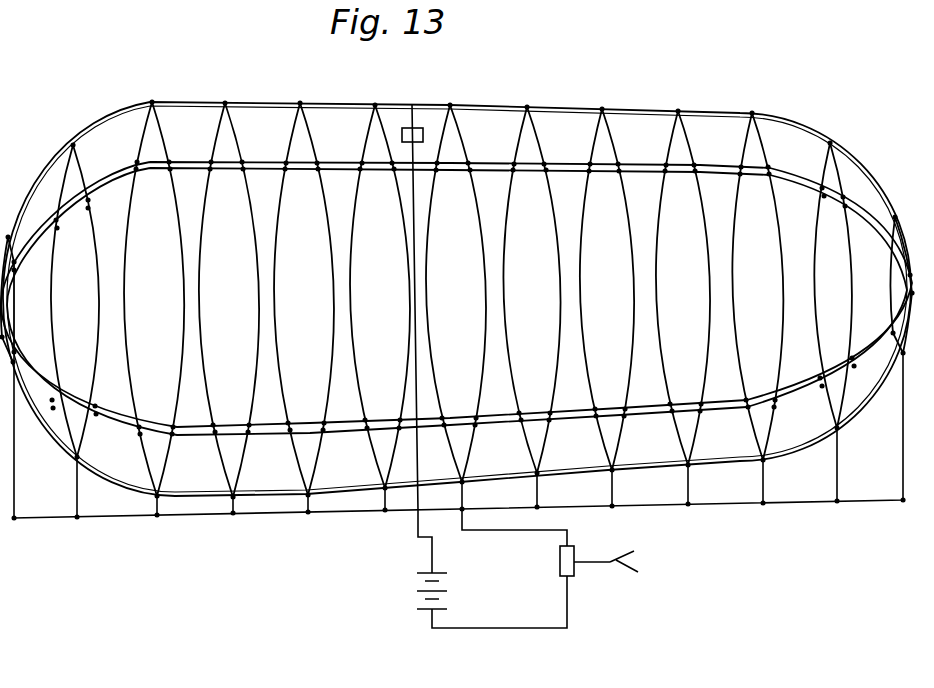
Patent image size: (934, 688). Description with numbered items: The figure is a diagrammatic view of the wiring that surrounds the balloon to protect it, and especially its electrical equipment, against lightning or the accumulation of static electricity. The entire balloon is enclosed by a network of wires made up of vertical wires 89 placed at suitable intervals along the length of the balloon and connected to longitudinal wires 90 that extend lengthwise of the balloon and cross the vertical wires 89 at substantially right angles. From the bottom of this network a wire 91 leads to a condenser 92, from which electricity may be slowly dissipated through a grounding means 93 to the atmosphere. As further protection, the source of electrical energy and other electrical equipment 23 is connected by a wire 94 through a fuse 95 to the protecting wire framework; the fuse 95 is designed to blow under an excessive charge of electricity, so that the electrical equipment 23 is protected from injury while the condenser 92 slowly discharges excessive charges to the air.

The vertical wires 89 is at (580, 299).
The longitudinal wires 90 is at (565, 108).
The wire 91 is at (463, 522).
The condenser 92 is at (556, 563).
The grounding means 93 is at (621, 559).
The wire 94 is at (415, 472).
The fuse 95 is at (418, 131).
The electrical equipment 23 is at (415, 603).